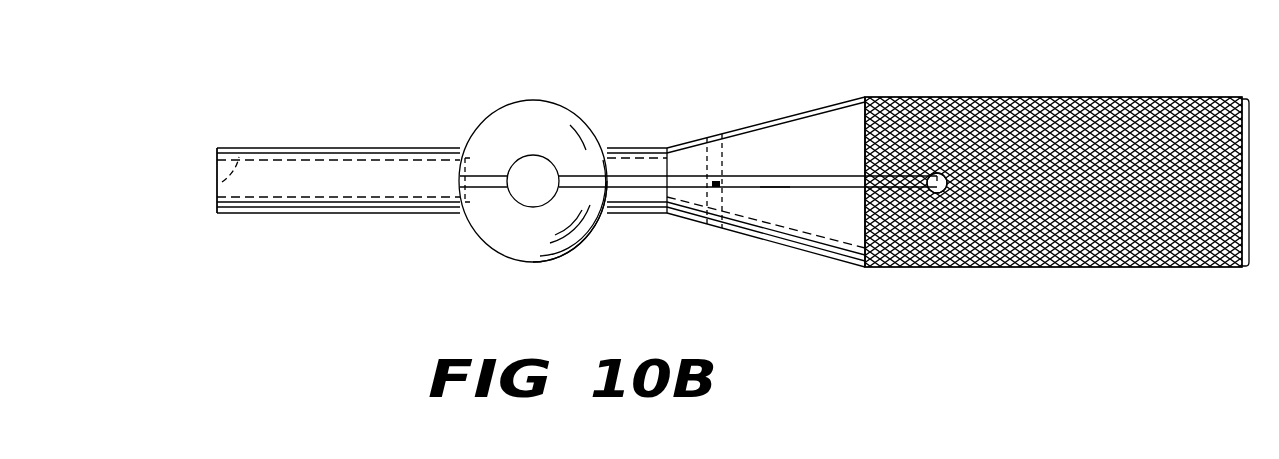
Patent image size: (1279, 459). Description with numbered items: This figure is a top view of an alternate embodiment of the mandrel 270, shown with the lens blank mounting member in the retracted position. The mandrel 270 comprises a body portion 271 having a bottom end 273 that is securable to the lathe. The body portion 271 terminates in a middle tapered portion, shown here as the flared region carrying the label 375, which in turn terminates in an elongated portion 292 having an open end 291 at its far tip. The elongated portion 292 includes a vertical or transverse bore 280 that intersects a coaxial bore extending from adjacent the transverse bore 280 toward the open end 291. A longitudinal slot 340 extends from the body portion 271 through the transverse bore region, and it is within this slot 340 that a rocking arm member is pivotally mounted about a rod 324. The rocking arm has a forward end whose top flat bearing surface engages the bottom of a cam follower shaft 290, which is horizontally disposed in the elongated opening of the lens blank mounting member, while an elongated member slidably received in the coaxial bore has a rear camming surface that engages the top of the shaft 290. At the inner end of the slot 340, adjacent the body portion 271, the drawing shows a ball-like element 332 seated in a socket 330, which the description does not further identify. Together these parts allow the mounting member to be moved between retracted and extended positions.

The mandrel 270 is at (450, 72).
The body portion 271 is at (1126, 96).
The bottom end 273 is at (1252, 114).
The transverse bore 280 is at (535, 160).
The cam follower shaft 290 is at (217, 184).
The open end 291 is at (217, 152).
The elongated portion 292 is at (386, 147).
The rod 324 is at (724, 177).
The socket 330 is at (945, 192).
The ball 332 is at (937, 173).
The longitudinal slot 340 is at (771, 186).
The flared section 375 is at (812, 110).